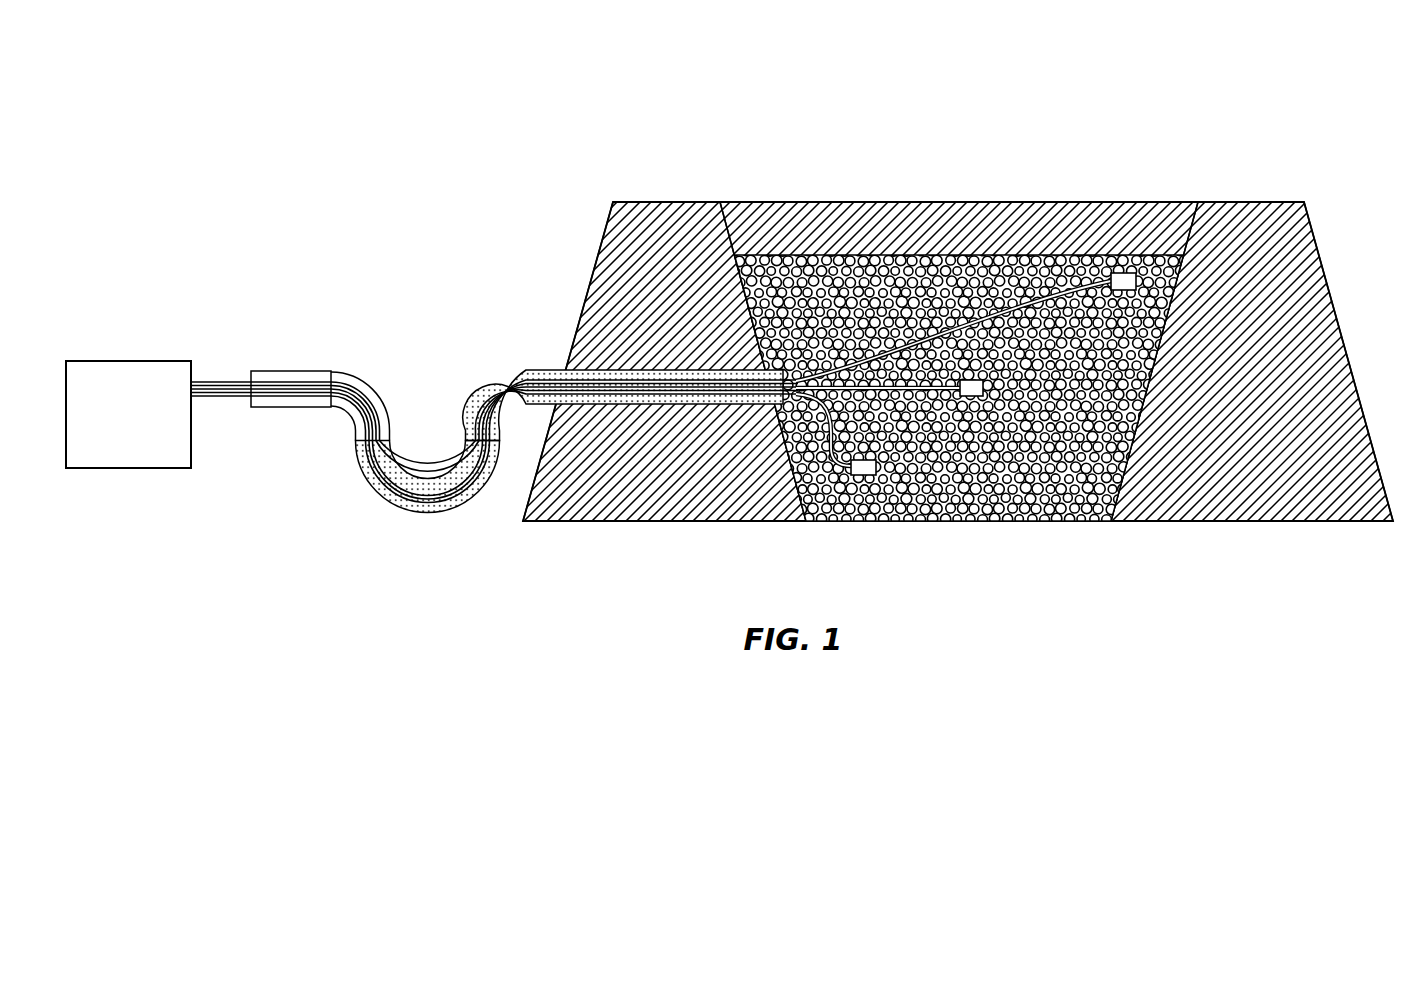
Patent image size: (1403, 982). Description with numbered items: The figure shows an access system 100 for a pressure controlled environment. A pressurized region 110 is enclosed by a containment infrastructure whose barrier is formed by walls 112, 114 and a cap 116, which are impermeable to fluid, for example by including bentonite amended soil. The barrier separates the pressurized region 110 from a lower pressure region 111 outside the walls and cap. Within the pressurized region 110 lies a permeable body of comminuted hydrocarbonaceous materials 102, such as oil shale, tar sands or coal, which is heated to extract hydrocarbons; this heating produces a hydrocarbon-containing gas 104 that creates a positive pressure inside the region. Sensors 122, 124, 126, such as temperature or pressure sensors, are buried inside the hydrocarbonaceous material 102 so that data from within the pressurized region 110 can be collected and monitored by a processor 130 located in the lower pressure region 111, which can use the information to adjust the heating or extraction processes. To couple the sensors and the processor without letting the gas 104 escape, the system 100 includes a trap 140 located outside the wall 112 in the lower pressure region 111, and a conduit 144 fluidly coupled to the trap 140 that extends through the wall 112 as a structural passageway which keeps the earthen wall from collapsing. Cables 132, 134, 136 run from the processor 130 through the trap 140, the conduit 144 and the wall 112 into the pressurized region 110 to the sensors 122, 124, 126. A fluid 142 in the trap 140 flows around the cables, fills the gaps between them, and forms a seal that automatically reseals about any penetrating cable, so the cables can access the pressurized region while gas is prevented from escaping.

The access system 100 is at (382, 68).
The hydrocarbonaceous materials 102 is at (1063, 407).
The hydrocarbon-containing gas 104 is at (475, 388).
The pressurized region 110 is at (898, 158).
The lower pressure region 111 is at (467, 198).
The wall 112 is at (658, 194).
The wall 114 is at (1250, 194).
The cap 116 is at (1026, 194).
The sensor 122 is at (1118, 265).
The sensor 124 is at (860, 467).
The sensor 126 is at (968, 388).
The processor 130 is at (127, 353).
The cable 132 is at (517, 370).
The cable 134 is at (557, 378).
The cable 136 is at (597, 370).
The trap 140 is at (494, 370).
The fluid 142 is at (420, 470).
The conduit 144 is at (517, 370).